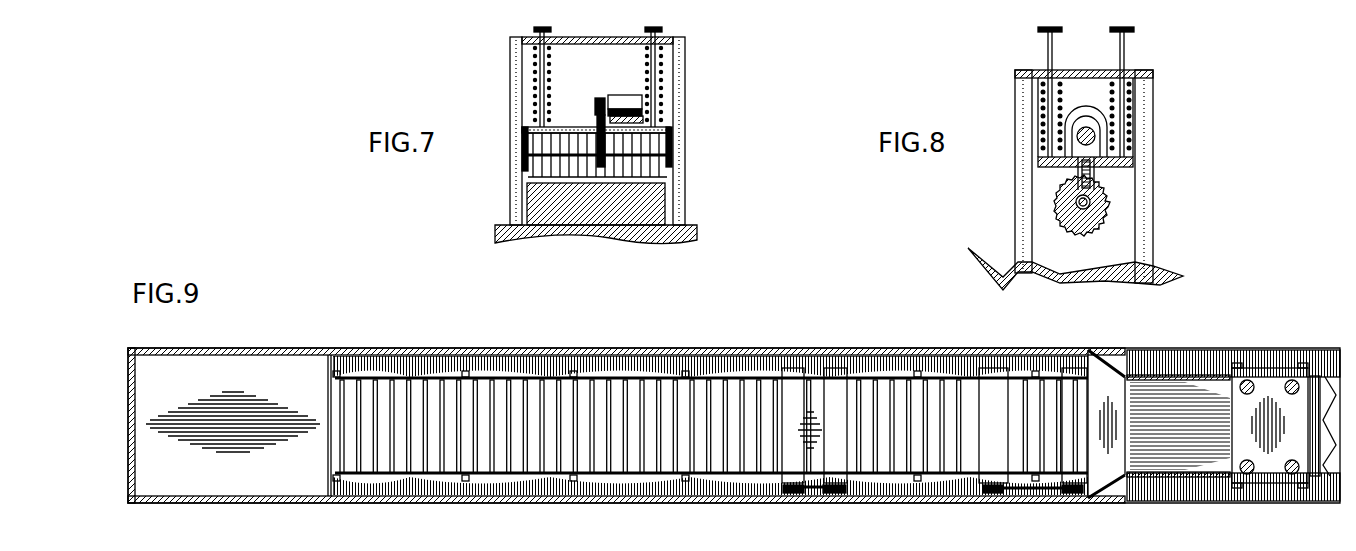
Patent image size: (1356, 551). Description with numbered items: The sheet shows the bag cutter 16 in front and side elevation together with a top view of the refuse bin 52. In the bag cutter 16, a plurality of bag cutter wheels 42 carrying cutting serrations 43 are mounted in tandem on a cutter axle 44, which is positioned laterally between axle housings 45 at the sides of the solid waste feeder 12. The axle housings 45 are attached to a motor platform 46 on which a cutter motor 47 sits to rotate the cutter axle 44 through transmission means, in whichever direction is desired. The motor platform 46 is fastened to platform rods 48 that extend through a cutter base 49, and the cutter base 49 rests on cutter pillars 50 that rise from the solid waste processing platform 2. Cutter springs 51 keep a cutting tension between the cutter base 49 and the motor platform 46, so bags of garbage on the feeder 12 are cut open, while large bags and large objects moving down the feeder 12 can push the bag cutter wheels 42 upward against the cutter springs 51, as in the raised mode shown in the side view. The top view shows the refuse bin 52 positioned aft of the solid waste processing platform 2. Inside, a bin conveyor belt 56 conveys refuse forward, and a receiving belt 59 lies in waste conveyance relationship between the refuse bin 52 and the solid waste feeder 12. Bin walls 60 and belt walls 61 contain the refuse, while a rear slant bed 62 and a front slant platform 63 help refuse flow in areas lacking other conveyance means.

In FIG. 7, the solid waste processing platform 2 is at (683, 232).
In FIG. 9, the solid waste processing platform 2 is at (1337, 350).
In FIG. 7, the solid waste feeder 12 is at (605, 195).
In FIG. 8, the solid waste feeder 12 is at (1105, 265).
In FIG. 9, the solid waste feeder 12 is at (1185, 400).
In FIG. 7, the bag cutter 16 is at (768, 62).
In FIG. 8, the bag cutter 16 is at (918, 62).
In FIG. 9, the bag cutter 16 is at (1270, 328).
In FIG. 7, the bag cutter wheels 42 is at (550, 172).
In FIG. 8, the bag cutter wheels 42 is at (1112, 206).
In FIG. 8, the cutting serrations 43 is at (1110, 190).
In FIG. 7, the cutter axle 44 is at (674, 156).
In FIG. 8, the cutter axle 44 is at (1065, 207).
In FIG. 7, the axle housings 45 is at (512, 135).
In FIG. 8, the axle housings 45 is at (1060, 180).
In FIG. 7, the motor platform 46 is at (655, 118).
In FIG. 8, the motor platform 46 is at (1130, 152).
In FIG. 7, the cutter motor 47 is at (628, 100).
In FIG. 8, the cutter motor 47 is at (1104, 122).
In FIG. 9, the cutter motor 47 is at (1296, 550).
In FIG. 7, the platform rods 48 is at (647, 54).
In FIG. 8, the platform rods 48 is at (1108, 96).
In FIG. 9, the platform rods 48 is at (1292, 380).
In FIG. 7, the cutter base 49 is at (663, 32).
In FIG. 8, the cutter base 49 is at (1100, 70).
In FIG. 9, the cutter base 49 is at (1170, 488).
In FIG. 7, the cutter pillars 50 is at (512, 50).
In FIG. 8, the cutter pillars 50 is at (1022, 82).
In FIG. 9, the cutter pillars 50 is at (1226, 490).
In FIG. 7, the cutter springs 51 is at (660, 72).
In FIG. 8, the cutter springs 51 is at (1125, 94).
In FIG. 9, the refuse bin 52 is at (268, 234).
In FIG. 9, the bin conveyor belt 56 is at (622, 425).
In FIG. 9, the receiving belt 59 is at (903, 430).
In FIG. 9, the bin walls 60 is at (540, 358).
In FIG. 9, the belt walls 61 is at (1125, 475).
In FIG. 9, the rear slant bed 62 is at (258, 434).
In FIG. 9, the front slant platform 63 is at (1135, 415).